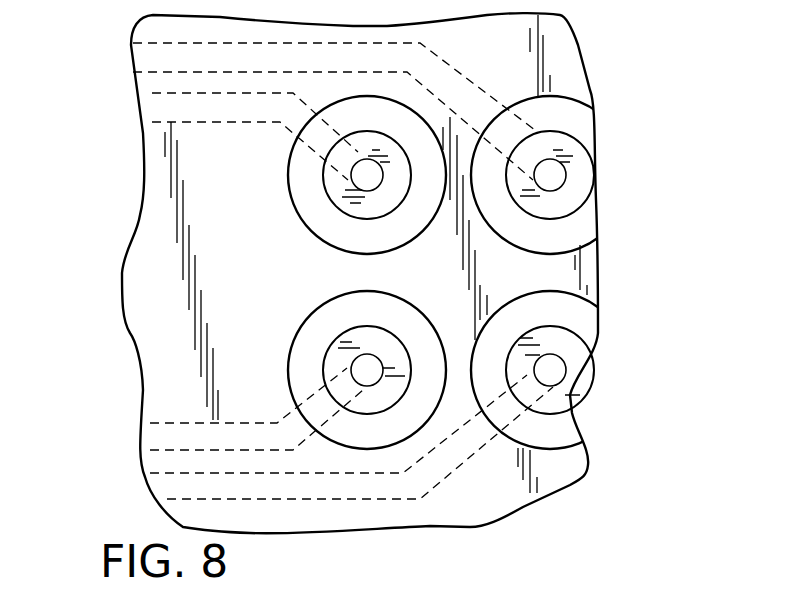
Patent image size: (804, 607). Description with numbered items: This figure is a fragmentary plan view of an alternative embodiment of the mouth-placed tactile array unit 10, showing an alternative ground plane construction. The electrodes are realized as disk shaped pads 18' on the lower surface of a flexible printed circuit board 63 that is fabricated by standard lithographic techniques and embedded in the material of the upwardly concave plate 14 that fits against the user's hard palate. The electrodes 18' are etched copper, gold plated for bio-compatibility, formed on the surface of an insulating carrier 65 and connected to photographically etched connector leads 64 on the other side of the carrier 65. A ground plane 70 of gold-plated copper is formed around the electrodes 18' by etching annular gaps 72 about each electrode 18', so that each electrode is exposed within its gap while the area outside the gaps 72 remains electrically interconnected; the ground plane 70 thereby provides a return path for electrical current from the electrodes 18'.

The mouth-placed tactile array unit 10 is at (525, 515).
The upwardly concave plate 14 is at (555, 276).
The electrodes 18' is at (458, 225).
The flexible printed circuit board 63 is at (573, 475).
The connector leads 64 is at (185, 60).
The insulating carrier 65 is at (580, 228).
The ground plane 70 is at (163, 332).
The annular gaps 72 is at (596, 333).